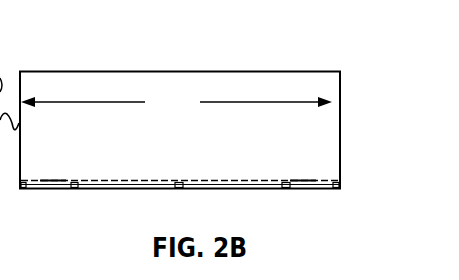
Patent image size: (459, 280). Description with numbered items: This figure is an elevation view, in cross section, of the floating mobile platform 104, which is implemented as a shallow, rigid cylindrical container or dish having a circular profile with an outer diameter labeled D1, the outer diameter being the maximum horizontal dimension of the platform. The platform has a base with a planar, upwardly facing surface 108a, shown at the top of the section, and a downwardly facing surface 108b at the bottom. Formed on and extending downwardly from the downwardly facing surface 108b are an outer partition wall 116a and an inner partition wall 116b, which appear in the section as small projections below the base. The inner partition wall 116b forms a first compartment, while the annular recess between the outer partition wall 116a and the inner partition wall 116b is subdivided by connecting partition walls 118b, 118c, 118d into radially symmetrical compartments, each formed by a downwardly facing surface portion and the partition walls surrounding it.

The floating mobile platform 104 is at (82, 68).
The upwardly facing surface 108a is at (162, 180).
The downwardly facing surface 108b is at (127, 185).
The outer partition wall 116a is at (23, 190).
The inner partition wall 116b is at (73, 190).
The connecting partition wall 118b is at (305, 183).
The connecting partition wall 118c is at (178, 187).
The connecting partition wall 118d is at (58, 182).